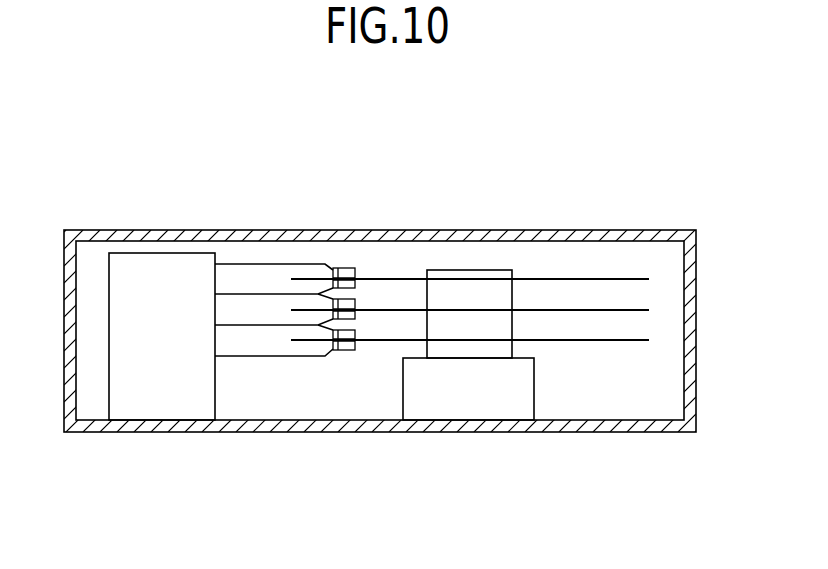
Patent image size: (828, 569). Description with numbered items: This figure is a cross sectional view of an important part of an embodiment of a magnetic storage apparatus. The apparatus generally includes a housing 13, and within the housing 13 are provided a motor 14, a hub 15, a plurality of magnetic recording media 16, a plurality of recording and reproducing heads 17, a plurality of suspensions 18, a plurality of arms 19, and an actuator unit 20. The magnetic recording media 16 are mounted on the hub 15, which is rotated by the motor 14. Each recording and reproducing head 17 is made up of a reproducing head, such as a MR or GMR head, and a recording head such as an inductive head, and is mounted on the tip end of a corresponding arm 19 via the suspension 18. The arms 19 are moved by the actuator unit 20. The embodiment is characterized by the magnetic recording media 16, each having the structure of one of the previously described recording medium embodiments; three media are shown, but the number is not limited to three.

The housing 13 is at (688, 405).
The motor 14 is at (470, 412).
The hub 15 is at (468, 266).
The magnetic recording media 16 is at (583, 274).
The recording and reproducing head 17 is at (352, 266).
The suspension 18 is at (332, 263).
The arm 19 is at (250, 262).
The actuator unit 20 is at (157, 415).